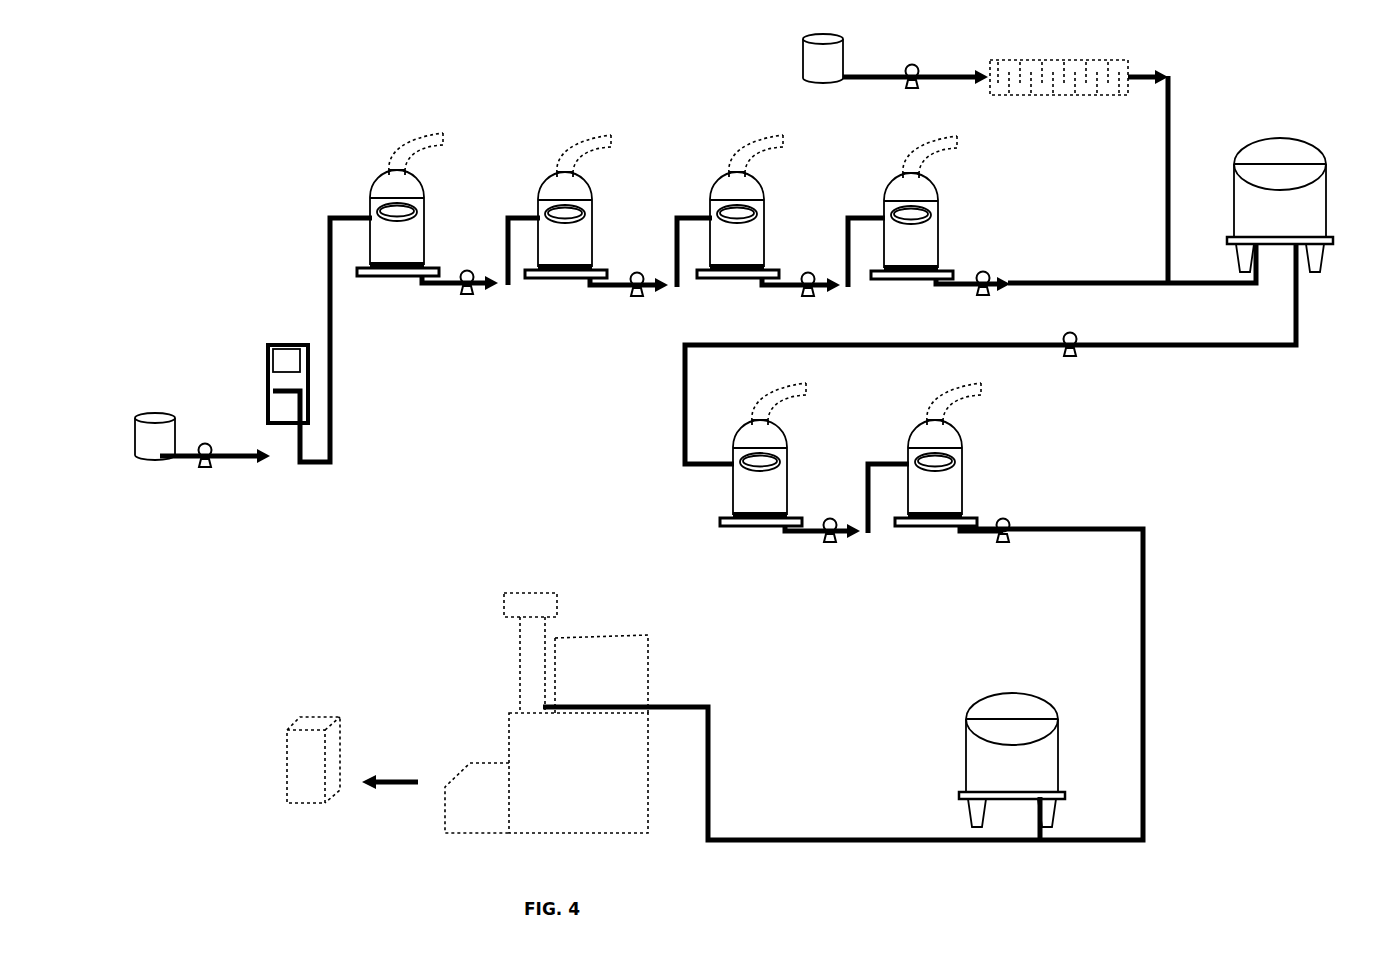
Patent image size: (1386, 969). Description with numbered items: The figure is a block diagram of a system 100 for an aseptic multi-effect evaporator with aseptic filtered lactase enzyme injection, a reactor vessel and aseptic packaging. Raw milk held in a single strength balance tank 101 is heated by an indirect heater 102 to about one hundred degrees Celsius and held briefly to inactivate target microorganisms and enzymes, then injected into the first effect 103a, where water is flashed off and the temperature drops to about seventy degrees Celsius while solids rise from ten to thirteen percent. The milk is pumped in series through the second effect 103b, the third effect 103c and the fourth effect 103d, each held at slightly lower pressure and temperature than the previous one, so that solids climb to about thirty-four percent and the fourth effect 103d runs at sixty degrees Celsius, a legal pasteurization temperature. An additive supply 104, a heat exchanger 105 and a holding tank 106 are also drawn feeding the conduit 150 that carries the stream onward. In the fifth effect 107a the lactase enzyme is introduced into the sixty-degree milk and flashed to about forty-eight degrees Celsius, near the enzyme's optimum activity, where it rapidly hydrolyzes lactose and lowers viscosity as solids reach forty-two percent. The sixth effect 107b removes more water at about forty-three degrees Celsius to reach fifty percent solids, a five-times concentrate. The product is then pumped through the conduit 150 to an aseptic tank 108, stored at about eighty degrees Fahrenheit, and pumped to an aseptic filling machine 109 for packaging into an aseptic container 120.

The system 100 is at (426, 528).
The single strength balance tank 101 is at (165, 413).
The indirect heater 102 is at (307, 320).
The first effect 103a is at (403, 276).
The second effect 103b is at (570, 278).
The third effect 103c is at (740, 277).
The fourth effect 103d is at (912, 279).
The additive tank 104 is at (823, 79).
The heat exchanger 105 is at (1068, 100).
The holding tank 106 is at (1233, 200).
The fifth effect 107a is at (760, 524).
The sixth effect 107b is at (935, 526).
The aseptic tank 108 is at (963, 723).
The aseptic filling machine 109 is at (630, 637).
The aseptic container 120 is at (340, 752).
The conduit 150 is at (1160, 249).